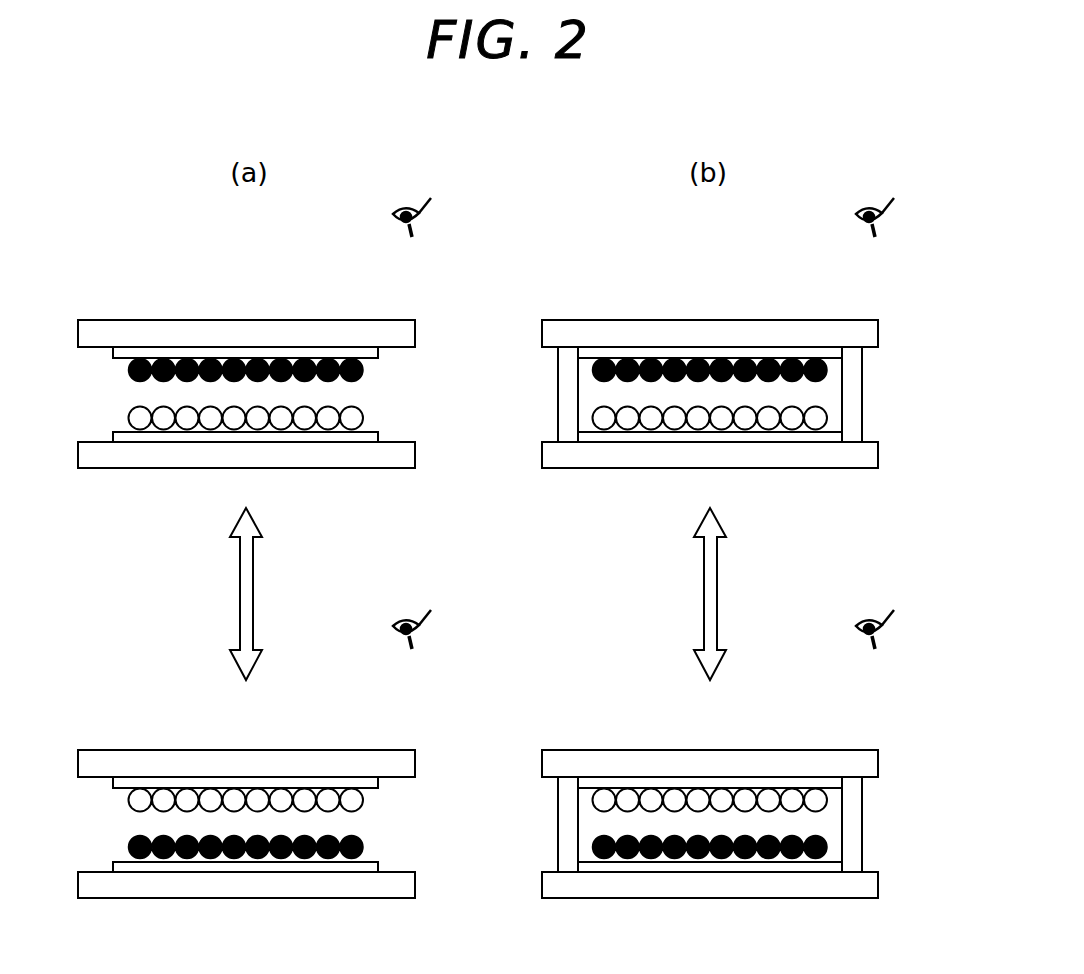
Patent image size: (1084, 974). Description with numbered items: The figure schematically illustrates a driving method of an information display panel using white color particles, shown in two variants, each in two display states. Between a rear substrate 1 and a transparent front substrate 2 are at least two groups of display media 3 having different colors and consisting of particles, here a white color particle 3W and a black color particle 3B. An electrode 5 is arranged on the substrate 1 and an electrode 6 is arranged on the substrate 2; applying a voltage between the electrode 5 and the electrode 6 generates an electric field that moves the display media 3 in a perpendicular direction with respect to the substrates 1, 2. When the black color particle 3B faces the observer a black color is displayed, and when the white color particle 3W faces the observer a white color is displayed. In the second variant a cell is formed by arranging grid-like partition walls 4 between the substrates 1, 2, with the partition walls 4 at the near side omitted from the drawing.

The substrate 1 is at (175, 460).
The substrate 2 is at (247, 331).
The display media 3 is at (500, 343).
The black color particle 3B is at (364, 372).
The white color particle 3W is at (364, 415).
The partition wall 4 is at (853, 392).
The electrode 5 is at (330, 437).
The electrode 6 is at (328, 356).